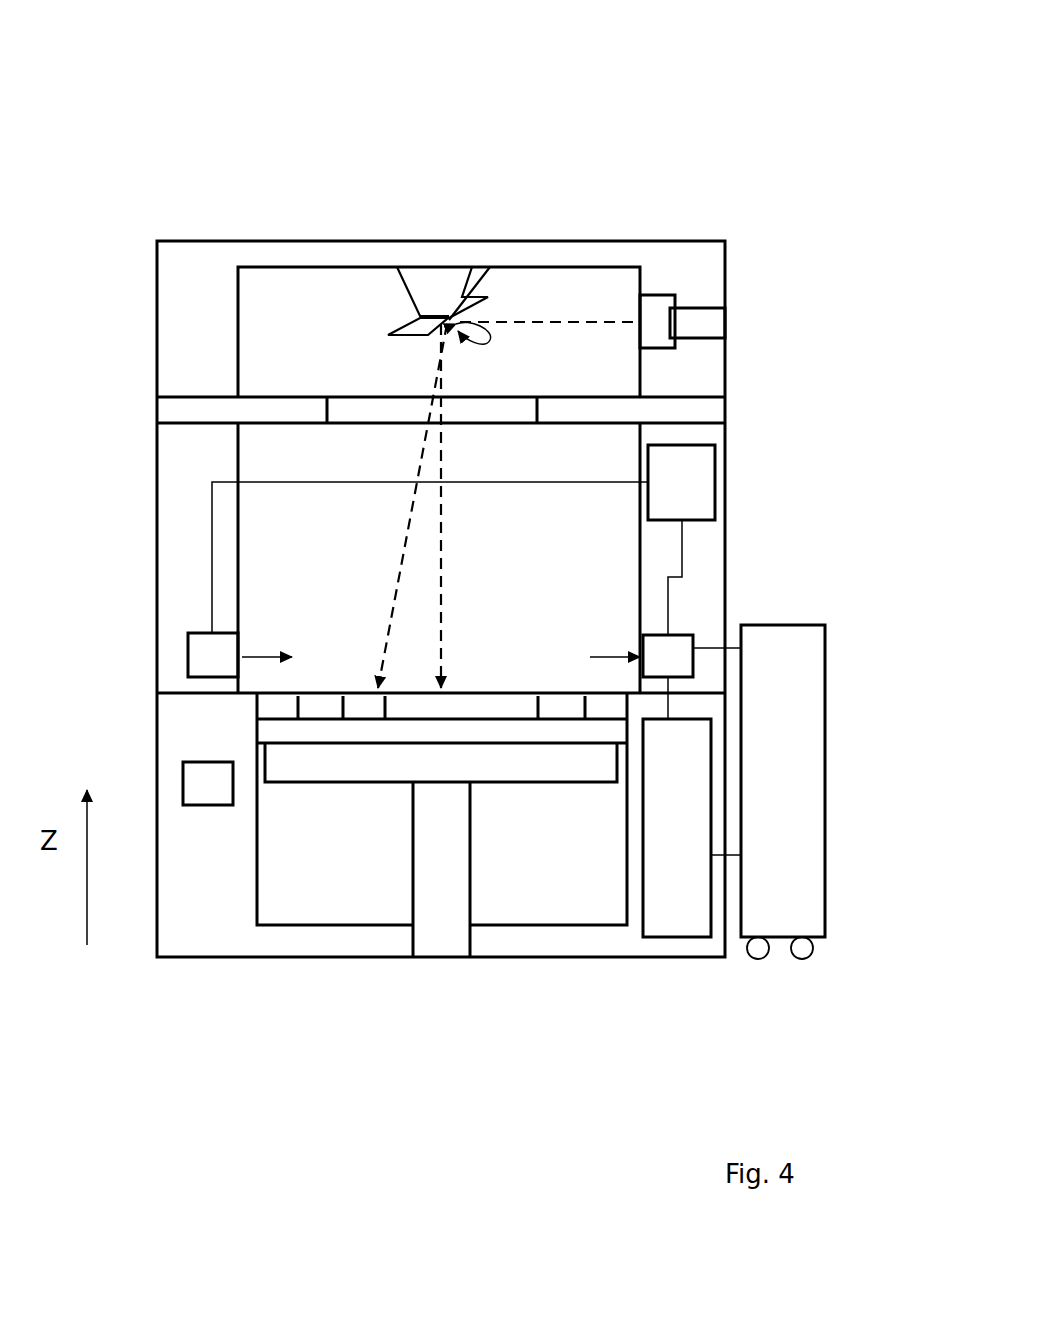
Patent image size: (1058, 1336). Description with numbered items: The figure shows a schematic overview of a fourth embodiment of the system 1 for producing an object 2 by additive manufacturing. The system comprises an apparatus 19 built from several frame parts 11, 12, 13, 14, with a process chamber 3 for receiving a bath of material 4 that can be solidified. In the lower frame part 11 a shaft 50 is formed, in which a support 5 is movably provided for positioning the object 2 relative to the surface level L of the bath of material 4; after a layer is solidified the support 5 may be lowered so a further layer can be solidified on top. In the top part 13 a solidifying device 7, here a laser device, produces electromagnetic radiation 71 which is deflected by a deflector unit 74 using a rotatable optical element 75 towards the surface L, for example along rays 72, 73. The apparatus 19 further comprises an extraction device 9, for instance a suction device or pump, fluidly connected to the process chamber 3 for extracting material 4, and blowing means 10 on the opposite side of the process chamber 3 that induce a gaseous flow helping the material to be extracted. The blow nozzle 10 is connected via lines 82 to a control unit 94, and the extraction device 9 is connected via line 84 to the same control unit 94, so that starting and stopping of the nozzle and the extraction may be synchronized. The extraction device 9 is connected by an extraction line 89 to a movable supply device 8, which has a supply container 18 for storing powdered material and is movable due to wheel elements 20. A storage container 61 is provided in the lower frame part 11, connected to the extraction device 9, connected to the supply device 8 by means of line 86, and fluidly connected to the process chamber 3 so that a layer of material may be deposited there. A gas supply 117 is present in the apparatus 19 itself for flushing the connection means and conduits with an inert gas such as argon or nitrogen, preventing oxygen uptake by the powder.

The system 1 is at (400, 1122).
The object 2 is at (325, 705).
The process chamber 3 is at (298, 592).
The bath of material 4 is at (480, 705).
The support 5 is at (579, 805).
The solidifying device 7 is at (693, 322).
The supply device 8 is at (853, 652).
The extraction device 9 is at (672, 650).
The blowing means 10 is at (215, 650).
The lower frame part 11 is at (192, 865).
The frame part 12 is at (192, 587).
The top part 13 is at (188, 318).
The frame part 14 is at (287, 410).
The supply container 18 is at (788, 690).
The apparatus 19 is at (210, 188).
The wheel elements 20 is at (755, 950).
The shaft 50 is at (472, 900).
The storage container 61 is at (682, 912).
The electromagnetic radiation 71 is at (580, 320).
The ray 72 is at (400, 568).
The ray 73 is at (445, 558).
The deflector unit 74 is at (434, 286).
The rotatable optical element 75 is at (457, 315).
The lines 82 is at (508, 482).
The line 84 is at (678, 563).
The line 86 is at (731, 855).
The extraction line 89 is at (708, 647).
The control unit 94 is at (670, 477).
The gas supply 117 is at (205, 783).
The surface level L is at (480, 705).